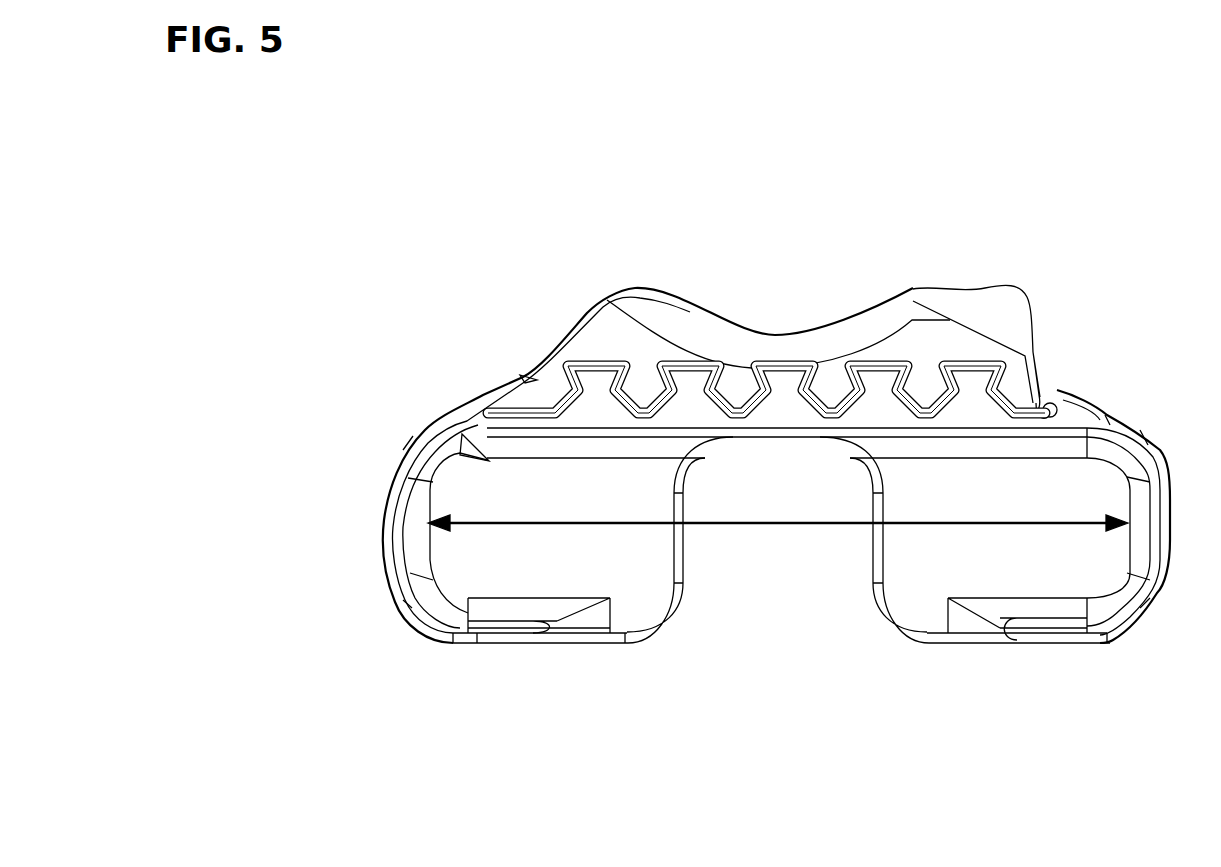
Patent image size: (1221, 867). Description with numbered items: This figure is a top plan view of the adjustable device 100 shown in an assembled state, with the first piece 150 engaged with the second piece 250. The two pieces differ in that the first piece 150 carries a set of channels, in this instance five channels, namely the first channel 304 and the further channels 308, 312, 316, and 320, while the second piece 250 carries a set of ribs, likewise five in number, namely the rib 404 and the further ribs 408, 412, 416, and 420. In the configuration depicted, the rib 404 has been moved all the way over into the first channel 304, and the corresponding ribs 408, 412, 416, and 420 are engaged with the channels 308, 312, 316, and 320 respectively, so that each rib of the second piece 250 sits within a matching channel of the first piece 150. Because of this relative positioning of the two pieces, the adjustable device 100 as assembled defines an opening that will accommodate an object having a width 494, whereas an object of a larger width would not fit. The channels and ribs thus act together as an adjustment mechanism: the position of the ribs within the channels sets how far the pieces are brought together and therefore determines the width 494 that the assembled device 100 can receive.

The adjustable device 100 is at (213, 93).
The first piece 150 is at (492, 643).
The second piece 250 is at (957, 643).
The first channel 304 is at (594, 357).
The channel 308 is at (677, 358).
The channel 312 is at (770, 360).
The channel 316 is at (857, 360).
The channel 320 is at (952, 315).
The rib 404 is at (600, 394).
The rib 408 is at (690, 396).
The rib 412 is at (781, 395).
The rib 416 is at (877, 400).
The rib 420 is at (975, 403).
The width 494 is at (705, 522).